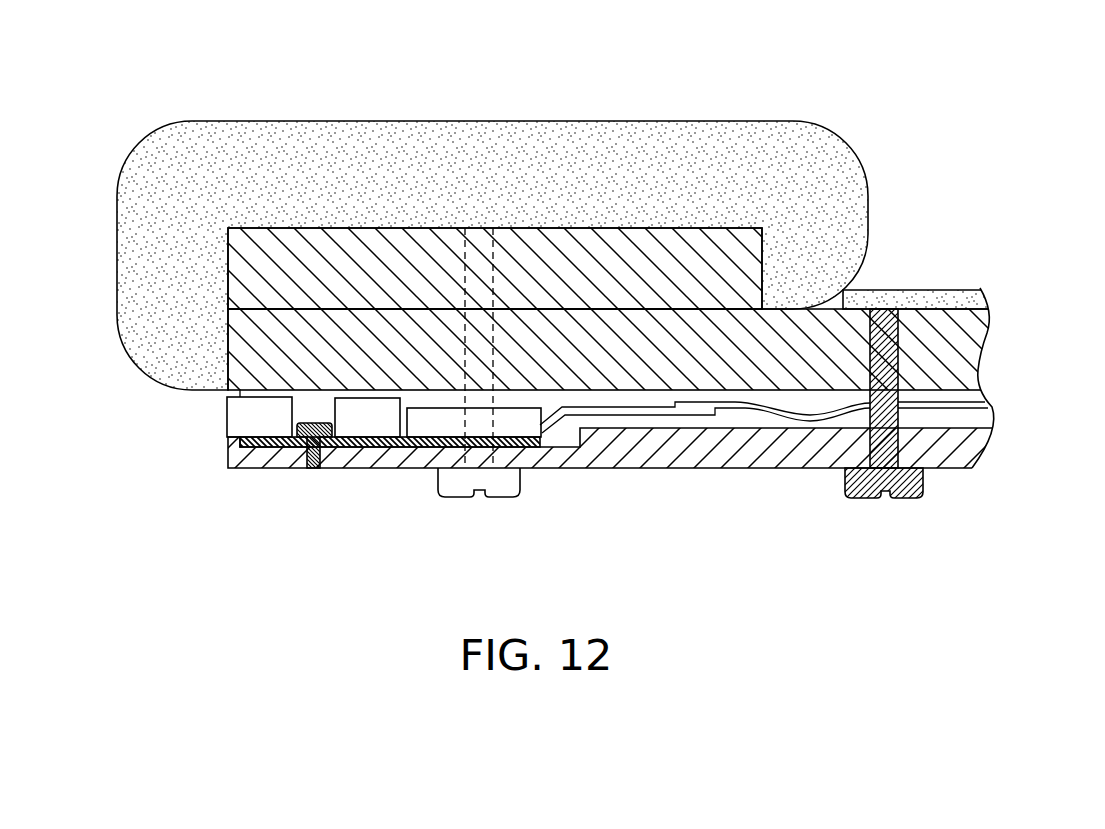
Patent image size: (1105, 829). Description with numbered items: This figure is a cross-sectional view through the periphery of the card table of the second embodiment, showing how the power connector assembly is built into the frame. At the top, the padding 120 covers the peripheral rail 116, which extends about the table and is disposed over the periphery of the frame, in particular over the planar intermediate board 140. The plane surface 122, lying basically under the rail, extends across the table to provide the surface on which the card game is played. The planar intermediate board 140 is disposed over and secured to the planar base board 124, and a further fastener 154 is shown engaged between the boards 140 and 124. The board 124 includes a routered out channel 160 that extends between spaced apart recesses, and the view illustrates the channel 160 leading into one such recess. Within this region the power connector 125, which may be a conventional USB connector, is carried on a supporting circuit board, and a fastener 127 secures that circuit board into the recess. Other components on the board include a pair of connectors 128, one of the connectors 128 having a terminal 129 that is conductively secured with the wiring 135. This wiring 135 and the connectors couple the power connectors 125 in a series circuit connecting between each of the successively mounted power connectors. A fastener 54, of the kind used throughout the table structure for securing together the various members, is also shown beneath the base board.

The fastener 54 is at (477, 493).
The peripheral rail 116 is at (618, 260).
The padding 120 is at (373, 173).
The plane surface 122 is at (938, 294).
The board 124 is at (717, 468).
The power connector 125 is at (240, 418).
The fastener 127 is at (297, 425).
The connector 128 is at (418, 428).
The terminal 129 is at (633, 412).
The wiring 135 is at (975, 405).
The planar intermediate board 140 is at (237, 354).
The fastener 154 is at (880, 495).
The channel 160 is at (975, 418).